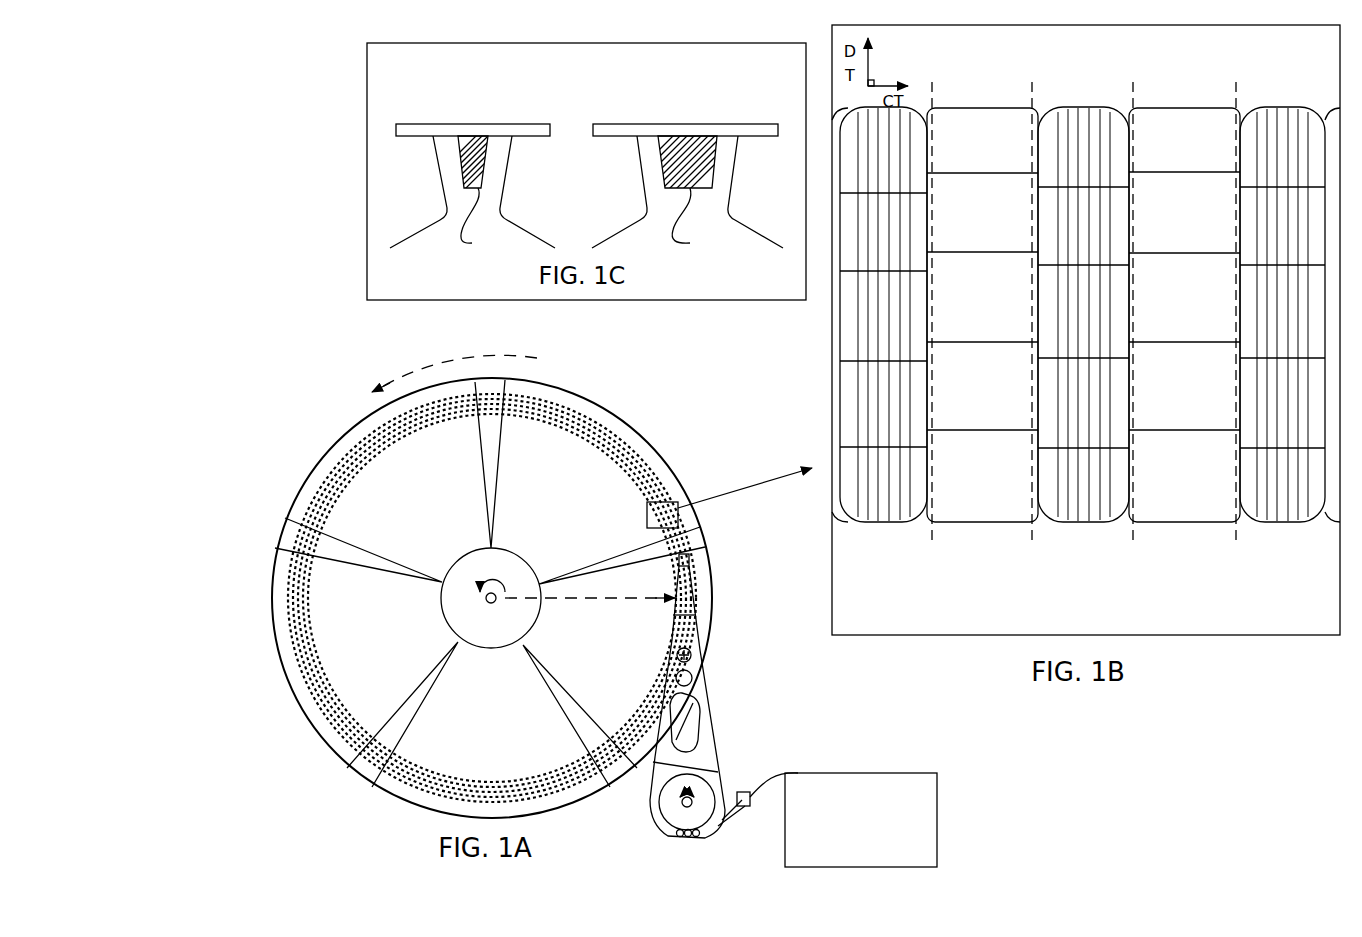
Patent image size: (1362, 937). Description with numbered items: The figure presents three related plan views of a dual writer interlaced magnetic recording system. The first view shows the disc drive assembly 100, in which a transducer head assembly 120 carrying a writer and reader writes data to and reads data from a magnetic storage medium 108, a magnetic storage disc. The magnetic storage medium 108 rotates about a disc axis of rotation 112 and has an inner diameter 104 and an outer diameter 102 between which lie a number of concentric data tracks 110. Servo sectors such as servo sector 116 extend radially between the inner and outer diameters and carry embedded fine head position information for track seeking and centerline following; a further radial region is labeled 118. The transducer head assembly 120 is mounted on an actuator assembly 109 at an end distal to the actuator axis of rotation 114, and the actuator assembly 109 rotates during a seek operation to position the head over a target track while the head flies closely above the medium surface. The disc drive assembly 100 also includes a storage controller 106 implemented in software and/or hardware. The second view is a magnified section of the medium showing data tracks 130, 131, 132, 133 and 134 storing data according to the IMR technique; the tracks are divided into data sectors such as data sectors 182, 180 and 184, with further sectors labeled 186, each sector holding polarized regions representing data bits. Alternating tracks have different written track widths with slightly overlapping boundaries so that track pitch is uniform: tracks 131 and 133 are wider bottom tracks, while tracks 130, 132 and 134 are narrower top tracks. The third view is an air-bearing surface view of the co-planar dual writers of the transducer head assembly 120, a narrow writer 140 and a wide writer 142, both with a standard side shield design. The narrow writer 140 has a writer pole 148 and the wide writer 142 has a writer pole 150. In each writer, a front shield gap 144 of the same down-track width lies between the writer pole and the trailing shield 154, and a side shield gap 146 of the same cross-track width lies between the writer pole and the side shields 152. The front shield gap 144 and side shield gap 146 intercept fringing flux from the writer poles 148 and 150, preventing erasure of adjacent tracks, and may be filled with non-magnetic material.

In FIG. 1A, the disc drive assembly 100 is at (320, 328).
In FIG. 1A, the outer diameter 102 is at (357, 423).
In FIG. 1A, the inner diameter 104 is at (442, 607).
In FIG. 1A, the storage controller 106 is at (843, 820).
In FIG. 1A, the magnetic storage medium 108 is at (385, 800).
In FIG. 1A, the actuator assembly 109 is at (703, 687).
In FIG. 1A, the concentric data tracks 110 is at (612, 442).
In FIG. 1A, the disc axis of rotation 112 is at (470, 582).
In FIG. 1A, the actuator axis of rotation 114 is at (682, 802).
In FIG. 1A, the servo sector 116 is at (275, 518).
In FIG. 1A, the second zone of tracks 118 is at (268, 550).
In FIG. 1A, the transducer head assembly 120 is at (690, 562).
In FIG. 1B, the data track 130 is at (880, 538).
In FIG. 1B, the data track 131 is at (973, 538).
In FIG. 1B, the data track 132 is at (1083, 538).
In FIG. 1B, the data track 133 is at (1178, 538).
In FIG. 1B, the data track 134 is at (1275, 538).
In FIG. 1C, the narrow writer 140 is at (468, 78).
In FIG. 1C, the wide writer 142 is at (693, 78).
In FIG. 1C, the front shield gap 144 is at (483, 126).
In FIG. 1C, the side shield gap 146 is at (450, 158).
In FIG. 1C, the writer pole 148 is at (473, 193).
In FIG. 1C, the writer pole 150 is at (684, 193).
In FIG. 1C, the side shields 152 is at (472, 192).
In FIG. 1C, the trailing shield 154 is at (473, 116).
In FIG. 1B, the data sector 180 is at (982, 308).
In FIG. 1B, the data sector 182 is at (1040, 311).
In FIG. 1B, the data sector 184 is at (1083, 313).
In FIG. 1B, the data sectors of edge track 186 is at (1282, 312).